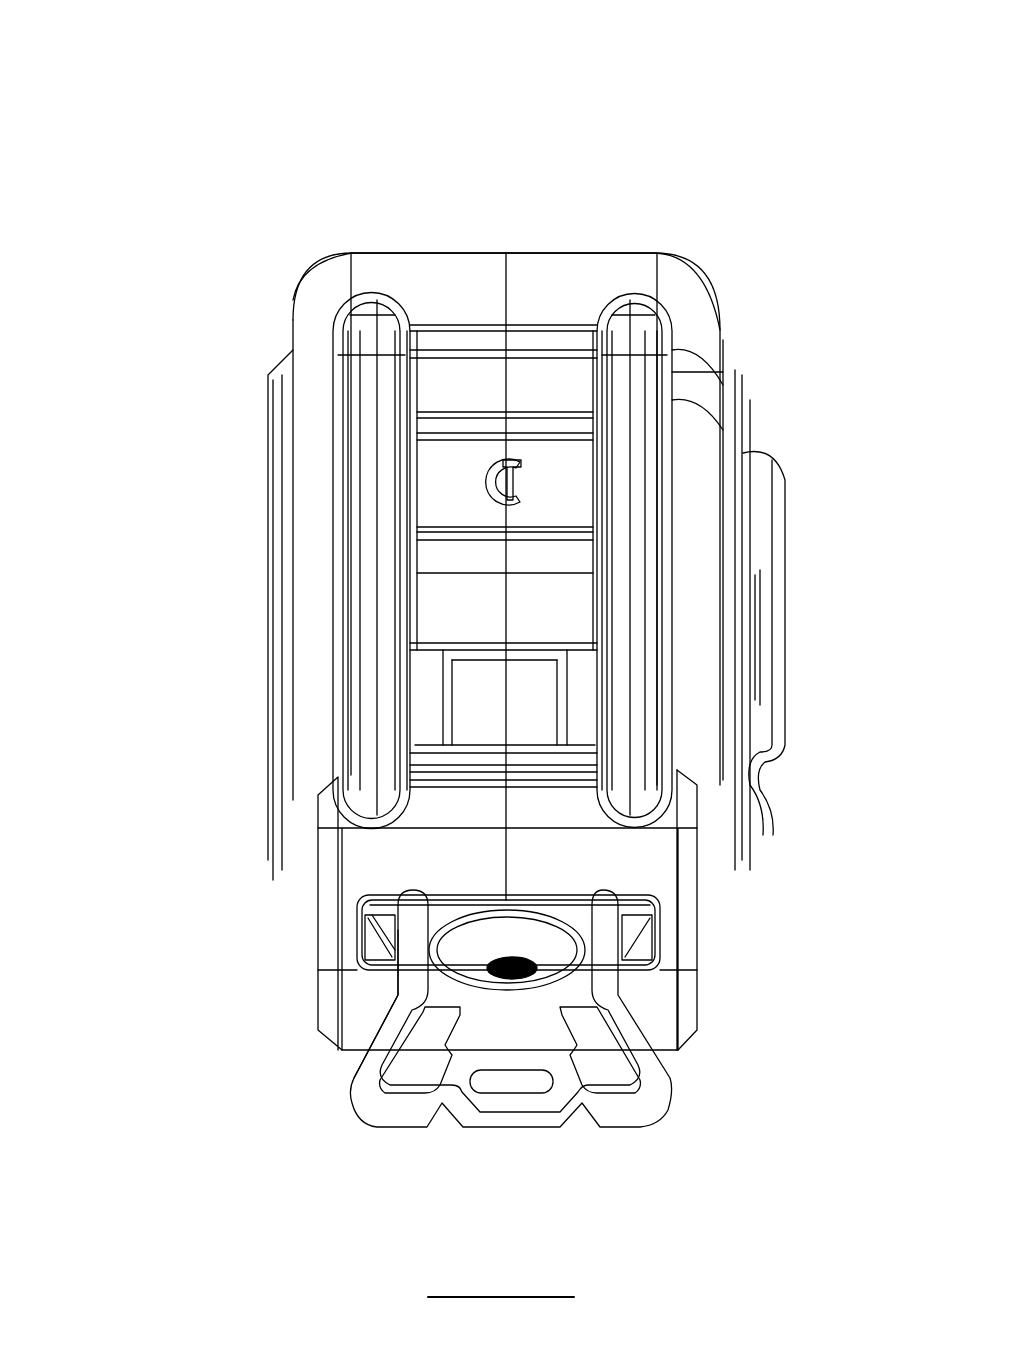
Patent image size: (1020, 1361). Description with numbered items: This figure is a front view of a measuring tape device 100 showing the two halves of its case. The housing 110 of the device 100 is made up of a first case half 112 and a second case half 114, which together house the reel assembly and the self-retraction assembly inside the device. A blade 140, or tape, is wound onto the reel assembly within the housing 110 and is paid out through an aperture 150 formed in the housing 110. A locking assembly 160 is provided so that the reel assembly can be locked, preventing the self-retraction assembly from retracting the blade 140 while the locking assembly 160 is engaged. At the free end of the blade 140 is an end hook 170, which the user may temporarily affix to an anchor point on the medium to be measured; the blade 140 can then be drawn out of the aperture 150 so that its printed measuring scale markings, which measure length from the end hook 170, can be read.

The measuring tape device 100 is at (158, 133).
The housing 110 is at (501, 229).
The first case half 112 is at (400, 272).
The second case half 114 is at (688, 270).
The blade 140 is at (660, 932).
The aperture 150 is at (381, 925).
The locking assembly 160 is at (565, 481).
The end hook 170 is at (630, 1103).